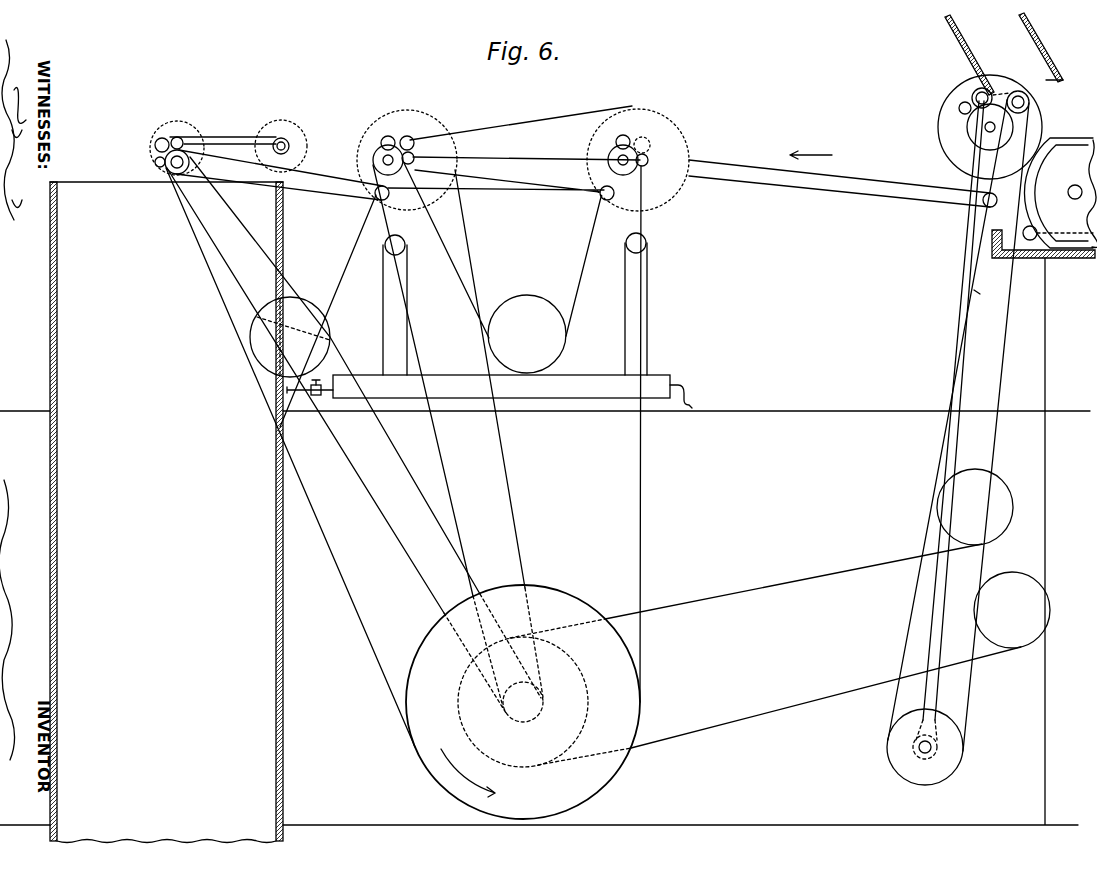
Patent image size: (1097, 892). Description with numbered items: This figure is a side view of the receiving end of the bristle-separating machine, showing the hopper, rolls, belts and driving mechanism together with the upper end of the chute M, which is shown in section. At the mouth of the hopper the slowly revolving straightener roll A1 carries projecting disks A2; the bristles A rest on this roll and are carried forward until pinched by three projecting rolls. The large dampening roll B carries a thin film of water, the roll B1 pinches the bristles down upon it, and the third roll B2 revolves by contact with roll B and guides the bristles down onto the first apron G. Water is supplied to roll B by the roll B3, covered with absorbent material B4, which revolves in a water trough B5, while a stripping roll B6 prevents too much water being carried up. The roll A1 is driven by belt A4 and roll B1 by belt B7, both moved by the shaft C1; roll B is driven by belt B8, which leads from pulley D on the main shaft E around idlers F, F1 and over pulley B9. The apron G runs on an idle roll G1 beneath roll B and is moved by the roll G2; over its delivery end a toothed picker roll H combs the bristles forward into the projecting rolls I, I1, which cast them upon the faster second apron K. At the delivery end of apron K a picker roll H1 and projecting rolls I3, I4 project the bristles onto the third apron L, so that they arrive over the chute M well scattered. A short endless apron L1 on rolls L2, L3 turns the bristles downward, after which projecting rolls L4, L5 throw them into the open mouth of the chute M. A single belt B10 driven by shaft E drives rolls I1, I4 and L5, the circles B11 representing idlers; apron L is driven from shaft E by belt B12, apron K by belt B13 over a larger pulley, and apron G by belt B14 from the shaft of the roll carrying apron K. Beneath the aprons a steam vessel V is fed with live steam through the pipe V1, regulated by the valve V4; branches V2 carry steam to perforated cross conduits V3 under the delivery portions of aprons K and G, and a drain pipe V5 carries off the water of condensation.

The chute M is at (166, 512).
The roll L3 is at (160, 144).
The projecting roll L5 is at (197, 174).
The projecting roll L4 is at (156, 166).
The roll L2 is at (280, 140).
The short endless apron L1 is at (239, 137).
The third apron L is at (333, 176).
The projecting roll I3 is at (387, 139).
The projecting roll I4 is at (384, 160).
The picker roll H1 is at (410, 141).
The belt B14 is at (515, 128).
The second apron K is at (526, 172).
The projecting roll I is at (624, 137).
The projecting roll I1 is at (618, 157).
The picker roll H is at (650, 146).
The roll or shaft G2 is at (643, 167).
The endless apron G is at (743, 164).
The vessel V is at (578, 378).
The drain pipe V5 is at (684, 390).
The branches V2 is at (405, 305).
The cross conduits V3 is at (392, 237).
The pipe V1 is at (298, 400).
The valve V4 is at (322, 382).
The idlers B11 is at (297, 300).
The belt B10 is at (213, 234).
The belt B12 is at (403, 462).
The belt B13 is at (445, 475).
The pulley D is at (587, 685).
The main shaft E is at (528, 715).
The belt B8 is at (778, 583).
The pulley B9 is at (943, 128).
The large roll B is at (975, 129).
The roll B1 is at (973, 91).
The third roll B2 is at (960, 106).
The projecting disks A2 is at (1017, 92).
The bristles A is at (969, 55).
The straightener roll A1 is at (1041, 50).
The absorbent covering B4 is at (1068, 139).
The roll B3 is at (1068, 186).
The stripping roll B6 is at (1037, 230).
The idle roll G1 is at (992, 207).
The trough or tray B5 is at (977, 292).
The belt B7 is at (957, 357).
The belt A4 is at (1003, 359).
The idler F is at (1013, 517).
The idler F1 is at (1012, 610).
The shaft C1 is at (917, 750).